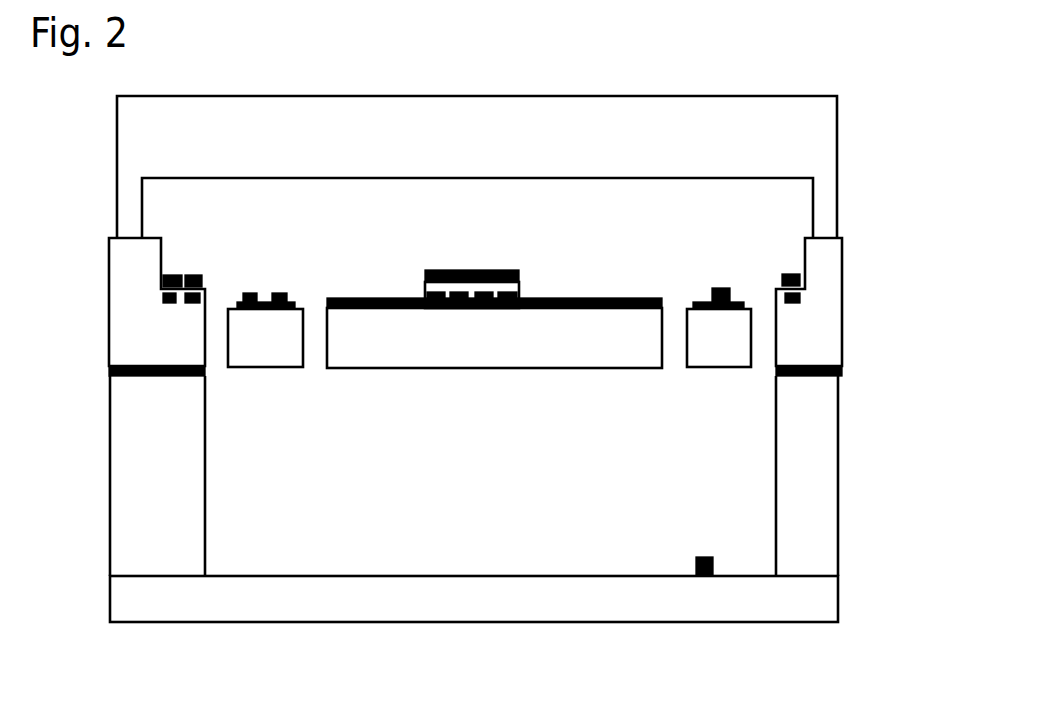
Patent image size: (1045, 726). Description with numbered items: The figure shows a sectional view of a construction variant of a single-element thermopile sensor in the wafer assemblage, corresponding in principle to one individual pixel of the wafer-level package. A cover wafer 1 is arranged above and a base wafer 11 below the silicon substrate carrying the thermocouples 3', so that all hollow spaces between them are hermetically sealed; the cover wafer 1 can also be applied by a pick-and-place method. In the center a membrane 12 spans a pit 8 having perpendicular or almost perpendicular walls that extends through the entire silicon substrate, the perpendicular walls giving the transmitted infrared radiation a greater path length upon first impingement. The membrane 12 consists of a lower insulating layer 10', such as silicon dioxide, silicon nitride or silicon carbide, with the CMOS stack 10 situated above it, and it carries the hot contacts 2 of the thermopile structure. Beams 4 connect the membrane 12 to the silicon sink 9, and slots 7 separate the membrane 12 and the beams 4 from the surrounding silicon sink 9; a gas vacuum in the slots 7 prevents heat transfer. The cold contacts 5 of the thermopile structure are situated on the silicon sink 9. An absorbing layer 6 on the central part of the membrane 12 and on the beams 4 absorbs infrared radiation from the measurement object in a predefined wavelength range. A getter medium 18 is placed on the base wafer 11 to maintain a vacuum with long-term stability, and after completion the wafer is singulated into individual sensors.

The cover wafer 1 is at (283, 152).
The hot contacts 2 is at (467, 270).
The thermocouples 3' is at (481, 245).
The beams 4 is at (253, 368).
The cold contacts 5 is at (191, 298).
The absorbing layer 6 is at (695, 300).
The slots 7 is at (215, 371).
The pit 8 is at (484, 504).
The silicon sink 9 is at (782, 466).
The CMOS stack 10 is at (842, 307).
The lower insulating layer 10' is at (124, 307).
The base wafer 11 is at (365, 576).
The membrane 12 is at (482, 369).
The getter medium 18 is at (693, 563).